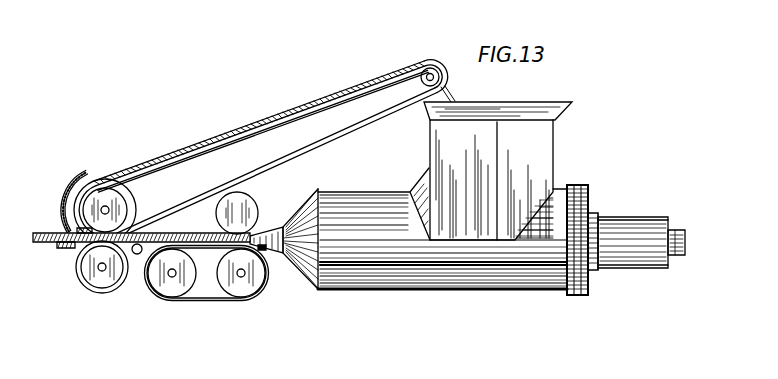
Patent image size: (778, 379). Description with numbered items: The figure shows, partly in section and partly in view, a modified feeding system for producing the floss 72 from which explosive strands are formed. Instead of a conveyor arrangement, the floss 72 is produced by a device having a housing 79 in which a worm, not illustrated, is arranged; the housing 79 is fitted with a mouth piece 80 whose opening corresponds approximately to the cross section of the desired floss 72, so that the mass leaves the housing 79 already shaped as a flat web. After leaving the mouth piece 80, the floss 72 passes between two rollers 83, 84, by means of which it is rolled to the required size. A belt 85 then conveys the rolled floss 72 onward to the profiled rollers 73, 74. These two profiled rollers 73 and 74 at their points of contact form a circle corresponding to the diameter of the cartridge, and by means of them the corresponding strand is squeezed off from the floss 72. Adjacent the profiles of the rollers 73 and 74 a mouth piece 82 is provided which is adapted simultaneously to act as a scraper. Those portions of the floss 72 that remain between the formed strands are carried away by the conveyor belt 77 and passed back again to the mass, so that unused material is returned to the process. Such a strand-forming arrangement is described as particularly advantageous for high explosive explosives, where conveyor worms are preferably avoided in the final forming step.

The floss 72 is at (190, 233).
The profiled roller 73 is at (105, 197).
The profiled roller 74 is at (103, 283).
The conveyor belt 77 is at (233, 140).
The housing 79 is at (468, 255).
The mouth piece 80 is at (267, 252).
The mouth piece 82 is at (67, 248).
The roller 83 is at (253, 200).
The roller 84 is at (240, 292).
The belt 85 is at (200, 302).